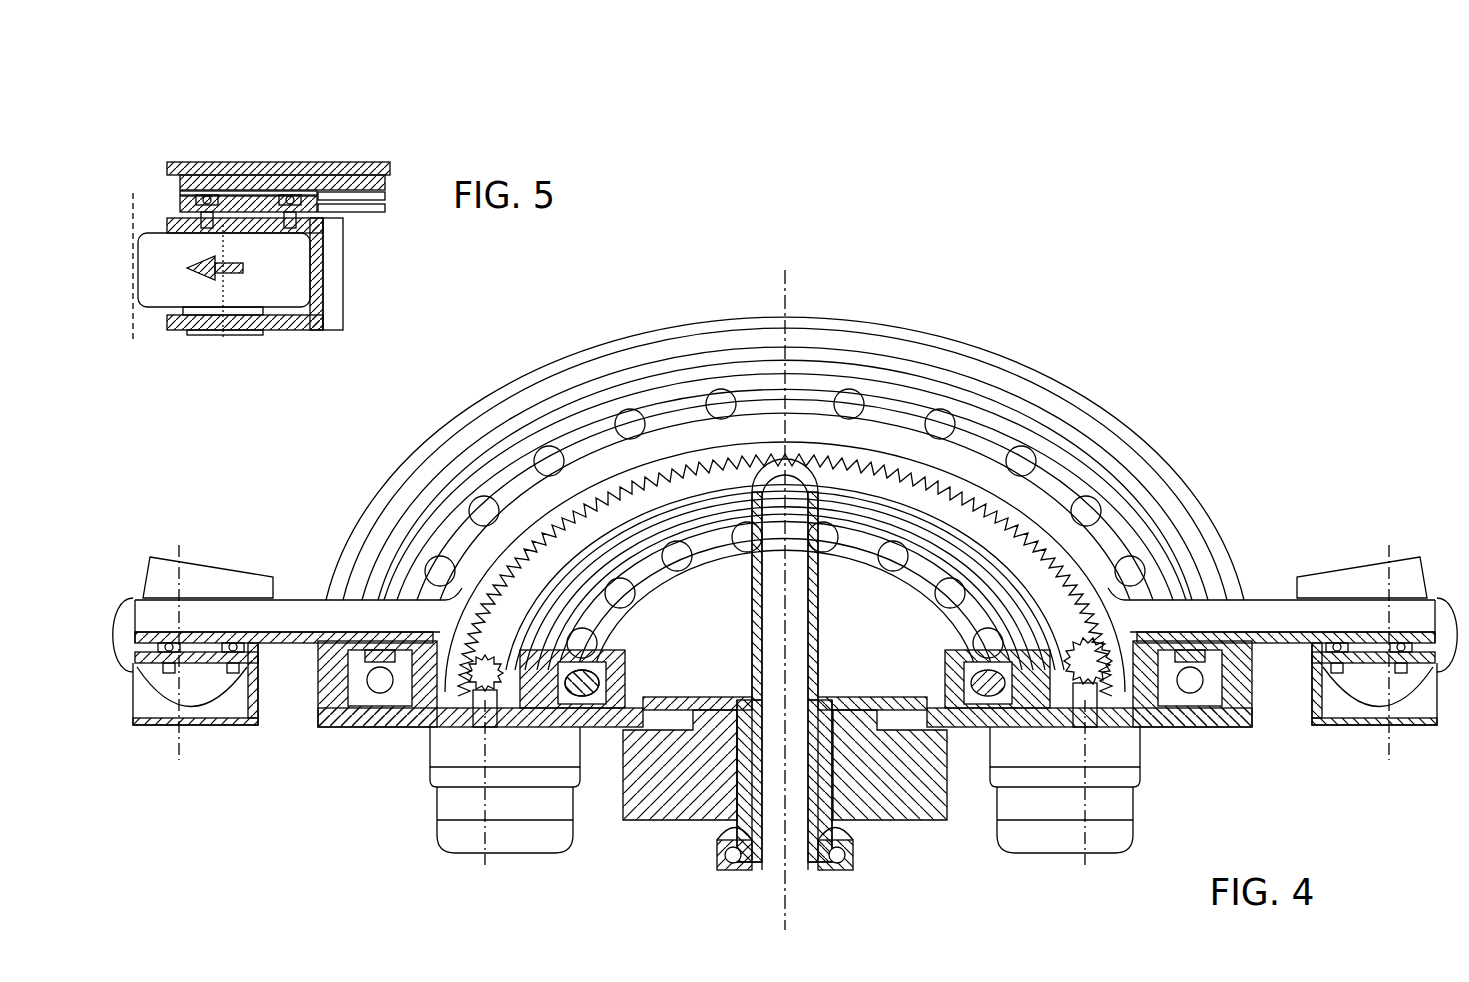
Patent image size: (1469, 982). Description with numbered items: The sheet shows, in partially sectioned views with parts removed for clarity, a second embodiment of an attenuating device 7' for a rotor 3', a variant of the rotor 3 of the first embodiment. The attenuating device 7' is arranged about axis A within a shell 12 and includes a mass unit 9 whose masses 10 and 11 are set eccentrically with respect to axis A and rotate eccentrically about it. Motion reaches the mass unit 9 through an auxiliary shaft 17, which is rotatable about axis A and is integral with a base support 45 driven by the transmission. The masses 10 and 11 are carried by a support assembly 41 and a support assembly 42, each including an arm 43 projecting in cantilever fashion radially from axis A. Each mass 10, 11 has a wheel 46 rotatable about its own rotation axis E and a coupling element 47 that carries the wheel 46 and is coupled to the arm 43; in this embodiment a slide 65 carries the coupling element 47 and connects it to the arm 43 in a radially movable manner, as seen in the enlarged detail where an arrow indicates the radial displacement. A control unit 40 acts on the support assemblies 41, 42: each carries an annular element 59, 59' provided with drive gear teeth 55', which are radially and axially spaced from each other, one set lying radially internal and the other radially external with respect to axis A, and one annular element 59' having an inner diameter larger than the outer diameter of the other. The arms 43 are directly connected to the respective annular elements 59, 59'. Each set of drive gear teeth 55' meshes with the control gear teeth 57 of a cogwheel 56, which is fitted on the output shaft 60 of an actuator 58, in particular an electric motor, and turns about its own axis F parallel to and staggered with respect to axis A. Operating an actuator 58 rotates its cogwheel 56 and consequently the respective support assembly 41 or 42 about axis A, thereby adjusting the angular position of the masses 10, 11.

In FIG. 5, the rotor 3 is at (515, 256).
In FIG. 4, the rotor 3' is at (932, 102).
In FIG. 4, the attenuating device 7' is at (1101, 208).
In FIG. 4, the mass unit 9 is at (1108, 380).
In FIG. 4, the mass 10 is at (188, 518).
In FIG. 4, the mass 11 is at (1395, 755).
In FIG. 5, the shell 12 is at (135, 315).
In FIG. 4, the auxiliary shaft 17 is at (763, 822).
In FIG. 4, the control unit 40 is at (428, 830).
In FIG. 4, the support assembly 41 is at (165, 530).
In FIG. 4, the support assembly 42 is at (1405, 528).
In FIG. 5, the arm 43 is at (345, 170).
In FIG. 4, the arm 43 is at (298, 605).
In FIG. 4, the base support 45 is at (600, 727).
In FIG. 5, the wheel 46 is at (160, 250).
In FIG. 4, the wheel 46 is at (133, 678).
In FIG. 5, the coupling element 47 is at (325, 270).
In FIG. 4, the coupling element 47 is at (217, 578).
In FIG. 4, the drive gear teeth 55' is at (787, 561).
In FIG. 4, the cogwheel 56 is at (497, 640).
In FIG. 4, the control gear teeth 57 is at (525, 705).
In FIG. 4, the actuator 58 is at (490, 860).
In FIG. 4, the annular element 59 is at (1102, 710).
In FIG. 4, the annular element 59' is at (410, 713).
In FIG. 4, the output shaft 60 is at (480, 718).
In FIG. 5, the slide 65 is at (243, 195).
In FIG. 4, the axis A is at (783, 314).
In FIG. 5, the rotation axis E is at (225, 335).
In FIG. 4, the rotation axis E is at (193, 728).
In FIG. 4, the axis F is at (483, 870).